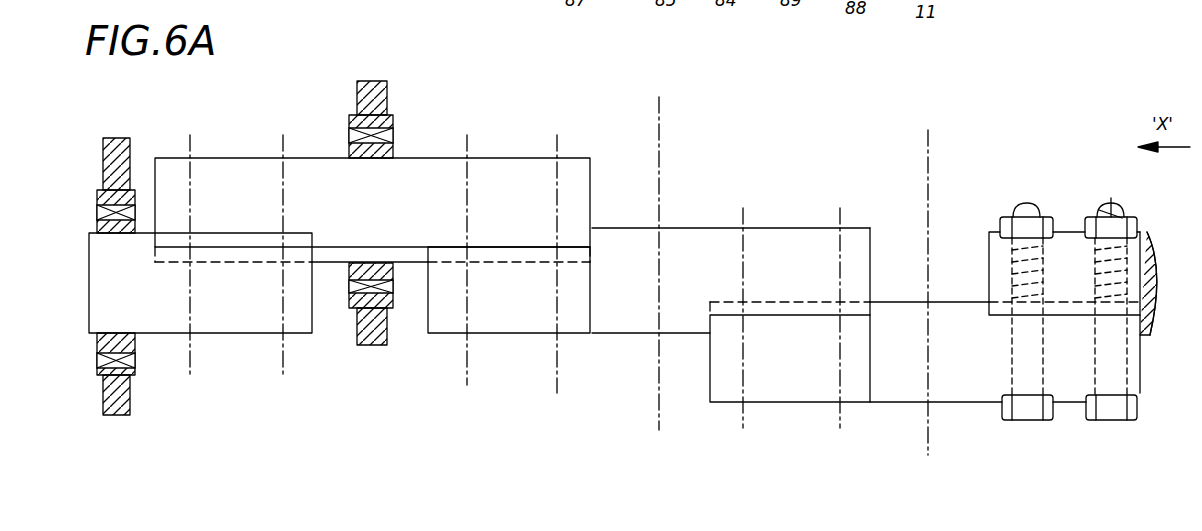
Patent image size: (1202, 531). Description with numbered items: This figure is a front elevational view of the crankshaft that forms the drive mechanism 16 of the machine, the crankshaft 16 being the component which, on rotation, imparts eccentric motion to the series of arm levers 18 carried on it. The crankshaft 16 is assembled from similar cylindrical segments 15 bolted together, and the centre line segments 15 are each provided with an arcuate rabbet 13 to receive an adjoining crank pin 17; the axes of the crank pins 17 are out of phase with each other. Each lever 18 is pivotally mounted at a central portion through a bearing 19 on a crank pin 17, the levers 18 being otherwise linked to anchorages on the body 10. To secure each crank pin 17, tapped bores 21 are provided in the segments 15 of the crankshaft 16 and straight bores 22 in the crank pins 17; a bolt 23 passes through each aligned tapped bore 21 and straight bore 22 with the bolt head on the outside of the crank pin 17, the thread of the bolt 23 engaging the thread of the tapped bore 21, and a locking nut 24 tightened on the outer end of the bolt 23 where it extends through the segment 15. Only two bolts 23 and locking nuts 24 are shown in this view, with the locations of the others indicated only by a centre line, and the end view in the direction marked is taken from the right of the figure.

The body 10 is at (130, 142).
The arcuate rabbet 13 is at (256, 262).
The cylindrical segment 15 is at (266, 326).
The drive mechanism 16 is at (166, 334).
The crank pin 17 is at (582, 160).
The arm lever 18 is at (357, 98).
The bearing 19 is at (393, 130).
The tapped bore 21 is at (1015, 280).
The straight bore 22 is at (1010, 382).
The bolt 23 is at (283, 146).
The locking nut 24 is at (1006, 222).